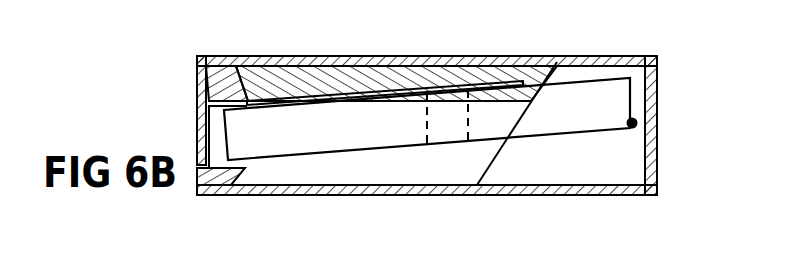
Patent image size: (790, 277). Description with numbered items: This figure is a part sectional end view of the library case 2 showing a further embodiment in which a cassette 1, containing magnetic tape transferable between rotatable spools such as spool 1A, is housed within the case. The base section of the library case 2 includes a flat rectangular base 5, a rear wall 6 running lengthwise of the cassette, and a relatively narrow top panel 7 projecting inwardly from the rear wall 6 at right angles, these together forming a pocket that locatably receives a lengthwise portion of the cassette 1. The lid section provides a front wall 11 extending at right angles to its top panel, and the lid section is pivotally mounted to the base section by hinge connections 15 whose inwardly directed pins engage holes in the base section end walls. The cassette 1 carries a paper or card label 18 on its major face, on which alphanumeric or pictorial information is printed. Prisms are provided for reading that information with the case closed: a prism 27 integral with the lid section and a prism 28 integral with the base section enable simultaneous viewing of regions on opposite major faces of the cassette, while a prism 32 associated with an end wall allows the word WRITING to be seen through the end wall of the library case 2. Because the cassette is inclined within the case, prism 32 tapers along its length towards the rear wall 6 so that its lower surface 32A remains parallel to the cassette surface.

The cassette 1 is at (427, 163).
The rotatable spool 1A is at (450, 124).
The library case 2 is at (403, 138).
The base 5 is at (418, 197).
The rear wall 6 is at (662, 114).
The top panel 7 is at (588, 53).
The front wall 11 is at (190, 115).
The hinge connection 15 is at (622, 137).
The label 18 is at (500, 83).
The prism 27 is at (215, 85).
The prism 28 is at (200, 188).
The prism 32 is at (396, 99).
The prism lower surface 32A is at (315, 56).